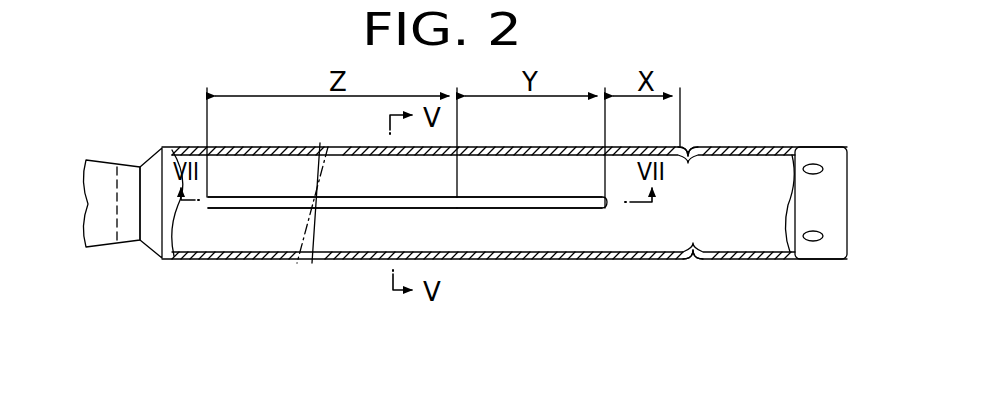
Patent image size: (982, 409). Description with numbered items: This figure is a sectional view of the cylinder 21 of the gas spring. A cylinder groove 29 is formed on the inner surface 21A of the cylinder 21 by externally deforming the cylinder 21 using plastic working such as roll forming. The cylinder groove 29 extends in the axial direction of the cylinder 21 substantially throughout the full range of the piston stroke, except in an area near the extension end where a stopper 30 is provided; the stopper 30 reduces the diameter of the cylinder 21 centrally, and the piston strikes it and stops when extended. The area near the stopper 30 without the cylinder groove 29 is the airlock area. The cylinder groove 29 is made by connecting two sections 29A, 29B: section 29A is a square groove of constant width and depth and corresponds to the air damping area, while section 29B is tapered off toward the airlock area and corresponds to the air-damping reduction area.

The cylinder 21 is at (758, 145).
The inner surface 21A is at (743, 239).
The cylinder groove 29 is at (540, 328).
The section 29A is at (357, 210).
The section 29B is at (527, 210).
The stopper 30 is at (693, 261).